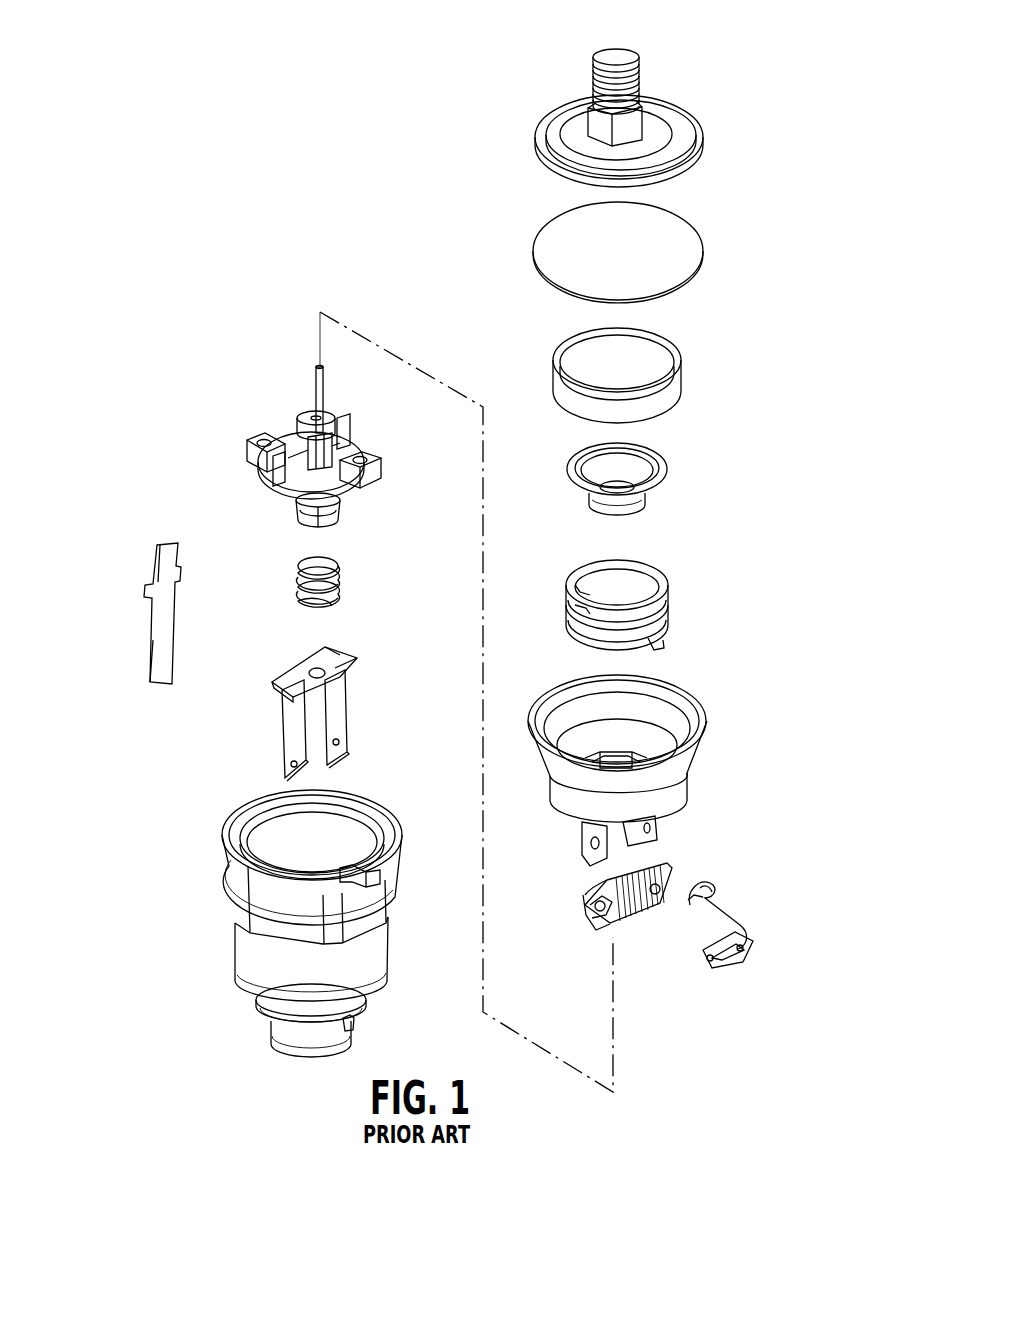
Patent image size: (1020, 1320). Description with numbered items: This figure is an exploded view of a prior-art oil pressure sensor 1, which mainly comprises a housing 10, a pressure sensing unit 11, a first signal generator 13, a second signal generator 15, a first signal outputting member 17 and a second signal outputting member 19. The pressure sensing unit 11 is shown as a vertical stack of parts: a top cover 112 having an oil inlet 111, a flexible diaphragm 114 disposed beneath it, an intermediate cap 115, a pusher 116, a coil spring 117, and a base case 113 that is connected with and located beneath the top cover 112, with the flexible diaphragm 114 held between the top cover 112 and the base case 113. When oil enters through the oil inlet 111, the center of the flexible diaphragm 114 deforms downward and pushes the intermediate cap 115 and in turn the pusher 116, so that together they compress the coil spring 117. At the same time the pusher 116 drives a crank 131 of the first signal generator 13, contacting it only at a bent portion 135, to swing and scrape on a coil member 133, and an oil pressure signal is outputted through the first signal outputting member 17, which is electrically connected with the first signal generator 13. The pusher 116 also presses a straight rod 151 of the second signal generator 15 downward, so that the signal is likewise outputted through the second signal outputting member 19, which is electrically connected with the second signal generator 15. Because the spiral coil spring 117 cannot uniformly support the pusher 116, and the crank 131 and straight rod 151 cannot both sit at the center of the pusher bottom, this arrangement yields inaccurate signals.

The oil pressure sensor 1 is at (339, 197).
The housing 10 is at (247, 943).
The pressure sensing unit 11 is at (728, 437).
The oil inlet 111 is at (618, 61).
The top cover 112 is at (690, 128).
The base case 113 is at (672, 787).
The flexible diaphragm 114 is at (705, 252).
The intermediate cap 115 is at (682, 387).
The pusher 116 is at (667, 467).
The coil spring 117 is at (665, 592).
The first signal generator 13 is at (753, 900).
The crank 131 is at (746, 947).
The coil member 133 is at (642, 872).
The bent portion 135 is at (716, 880).
The second signal generator 15 is at (232, 460).
The straight rod 151 is at (312, 390).
The first signal outputting member 17 is at (160, 622).
The second signal outputting member 19 is at (334, 699).